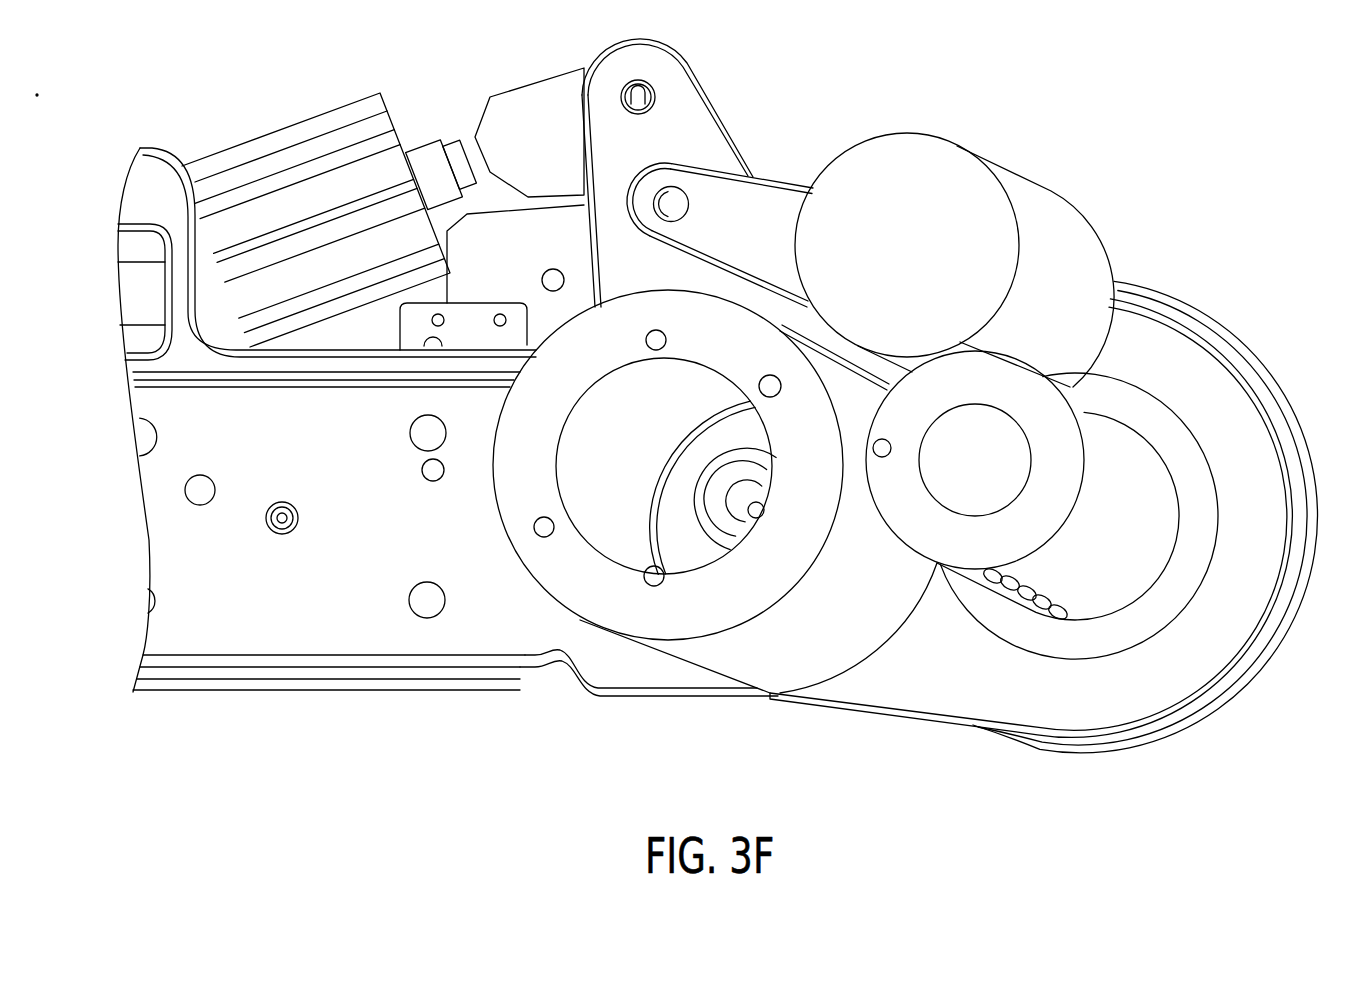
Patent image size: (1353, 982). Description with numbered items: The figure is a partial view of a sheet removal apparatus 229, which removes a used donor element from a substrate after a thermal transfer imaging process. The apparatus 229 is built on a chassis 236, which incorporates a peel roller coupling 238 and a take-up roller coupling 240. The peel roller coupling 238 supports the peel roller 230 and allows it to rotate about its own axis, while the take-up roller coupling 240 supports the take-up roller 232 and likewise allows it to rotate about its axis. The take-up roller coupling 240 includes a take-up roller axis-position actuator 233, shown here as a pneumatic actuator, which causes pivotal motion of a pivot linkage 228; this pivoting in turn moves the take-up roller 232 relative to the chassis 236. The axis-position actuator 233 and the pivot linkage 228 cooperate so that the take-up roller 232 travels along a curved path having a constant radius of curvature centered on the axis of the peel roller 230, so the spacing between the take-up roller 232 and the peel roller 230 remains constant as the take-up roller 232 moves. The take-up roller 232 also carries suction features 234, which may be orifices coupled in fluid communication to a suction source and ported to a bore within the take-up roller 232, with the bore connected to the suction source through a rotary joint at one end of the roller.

The pivot linkage 228 is at (655, 98).
The sheet removal apparatus 229 is at (1056, 144).
The peel roller 230 is at (578, 597).
The take-up roller 232 is at (1117, 597).
The take-up roller axis-position actuator 233 is at (420, 170).
The suction features 234 is at (1025, 598).
The chassis 236 is at (300, 622).
The peel roller coupling 238 is at (377, 603).
The take-up roller coupling 240 is at (1203, 385).